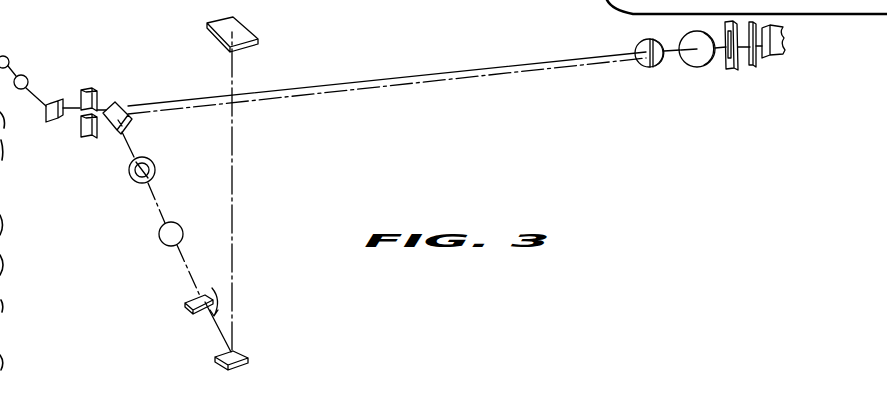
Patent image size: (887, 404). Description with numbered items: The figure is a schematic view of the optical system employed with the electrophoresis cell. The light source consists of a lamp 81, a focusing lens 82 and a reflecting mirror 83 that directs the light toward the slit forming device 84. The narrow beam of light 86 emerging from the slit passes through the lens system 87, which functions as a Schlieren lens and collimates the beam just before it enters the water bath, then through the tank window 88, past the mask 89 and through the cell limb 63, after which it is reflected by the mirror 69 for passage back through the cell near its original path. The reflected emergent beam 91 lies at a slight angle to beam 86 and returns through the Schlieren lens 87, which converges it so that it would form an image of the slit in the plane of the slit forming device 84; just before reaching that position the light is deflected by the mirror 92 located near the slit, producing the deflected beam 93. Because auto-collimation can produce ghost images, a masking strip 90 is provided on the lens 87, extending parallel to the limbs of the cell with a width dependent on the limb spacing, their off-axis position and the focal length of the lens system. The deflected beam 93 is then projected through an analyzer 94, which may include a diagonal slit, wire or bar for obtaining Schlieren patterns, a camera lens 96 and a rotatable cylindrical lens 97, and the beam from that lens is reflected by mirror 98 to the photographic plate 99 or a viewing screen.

The lamp 81 is at (6, 56).
The focusing lens 82 is at (27, 77).
The reflecting mirror 83 is at (47, 118).
The slit forming device 84 is at (94, 92).
The narrow beam of light 86 is at (143, 108).
The lens system 87 is at (650, 68).
The tank window 88 is at (697, 67).
The mask 89 is at (733, 70).
The masking strip 90 is at (638, 63).
The reflected emergent beam 91 is at (352, 84).
The mirror 92 is at (129, 125).
The deflected beam 93 is at (128, 152).
The analyzer 94 is at (155, 168).
The camera lens 96 is at (173, 231).
The rotatable cylindrical lens 97 is at (207, 293).
The mirror 98 is at (238, 354).
The photographic plate 99 is at (245, 35).
The cell limb 63 is at (757, 63).
The mirror 69 is at (785, 46).